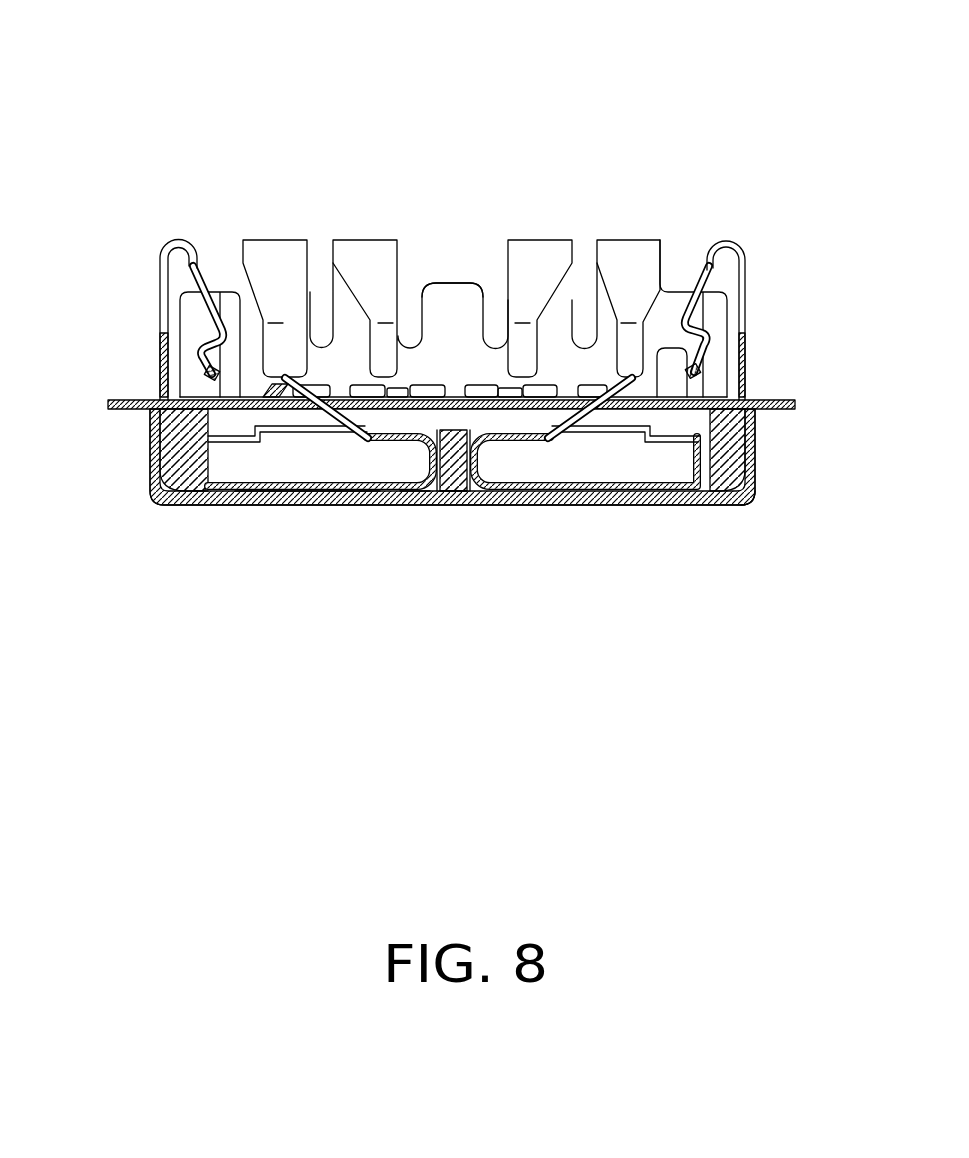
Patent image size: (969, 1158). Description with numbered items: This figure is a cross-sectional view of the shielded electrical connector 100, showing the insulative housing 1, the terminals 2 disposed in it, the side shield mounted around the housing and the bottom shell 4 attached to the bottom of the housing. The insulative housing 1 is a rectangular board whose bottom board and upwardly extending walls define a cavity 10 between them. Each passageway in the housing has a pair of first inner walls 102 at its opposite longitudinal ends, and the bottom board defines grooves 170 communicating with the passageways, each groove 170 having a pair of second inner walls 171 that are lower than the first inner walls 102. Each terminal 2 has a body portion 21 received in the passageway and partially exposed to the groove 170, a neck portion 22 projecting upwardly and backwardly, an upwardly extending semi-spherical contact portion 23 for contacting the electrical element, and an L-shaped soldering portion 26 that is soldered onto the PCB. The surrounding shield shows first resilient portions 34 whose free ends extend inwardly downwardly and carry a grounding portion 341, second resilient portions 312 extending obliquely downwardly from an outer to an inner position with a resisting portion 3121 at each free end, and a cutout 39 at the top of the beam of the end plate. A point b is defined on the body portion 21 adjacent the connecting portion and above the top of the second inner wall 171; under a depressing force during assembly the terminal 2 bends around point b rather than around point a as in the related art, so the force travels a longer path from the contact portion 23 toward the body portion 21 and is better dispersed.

The shielded electrical connector 100 is at (453, 47).
The insulative housing 1 is at (757, 460).
The terminal 2 is at (774, 400).
The bottom shell 4 is at (754, 498).
The cavity 10 is at (642, 460).
The first inner wall 102 is at (194, 503).
The groove 170 is at (572, 495).
The second inner wall 171 is at (278, 503).
The body portion 21 is at (308, 480).
The neck portion 22 is at (348, 430).
The contact portion 23 is at (285, 376).
The soldering portion 26 is at (132, 399).
The cutout 39 is at (461, 272).
The first resilient portion 34 is at (198, 303).
The grounding portion 341 is at (692, 356).
The second resilient portion 312 is at (210, 262).
The resisting portion 3121 is at (683, 330).
The point a is at (414, 500).
The point b is at (247, 507).